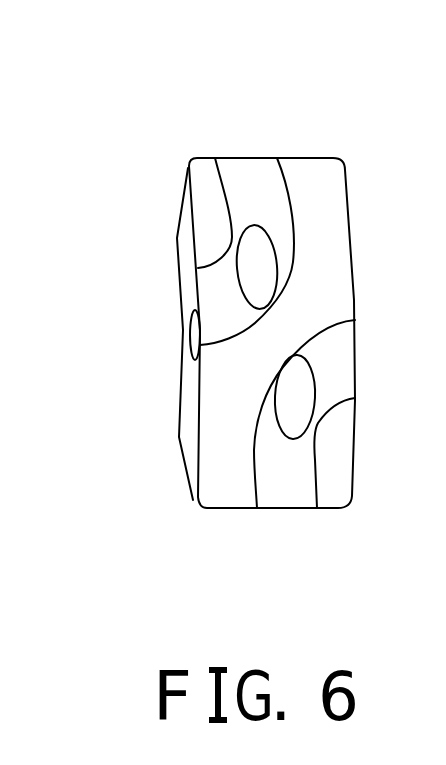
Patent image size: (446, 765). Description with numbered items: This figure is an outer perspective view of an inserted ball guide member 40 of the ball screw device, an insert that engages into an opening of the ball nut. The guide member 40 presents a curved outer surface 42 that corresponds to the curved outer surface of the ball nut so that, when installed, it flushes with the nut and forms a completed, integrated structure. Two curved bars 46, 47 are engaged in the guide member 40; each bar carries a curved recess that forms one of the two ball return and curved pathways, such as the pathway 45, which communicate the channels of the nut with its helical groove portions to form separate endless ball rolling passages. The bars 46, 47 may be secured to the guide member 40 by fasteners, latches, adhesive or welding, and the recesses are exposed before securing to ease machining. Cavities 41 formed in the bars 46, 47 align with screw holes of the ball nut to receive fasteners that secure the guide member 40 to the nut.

The ball guide member 40 is at (332, 133).
The cavity 41 is at (263, 267).
The curved outer surface 42 is at (225, 482).
The ball return and curved pathway 45 is at (200, 335).
The bar 46 is at (287, 485).
The bar 47 is at (252, 173).